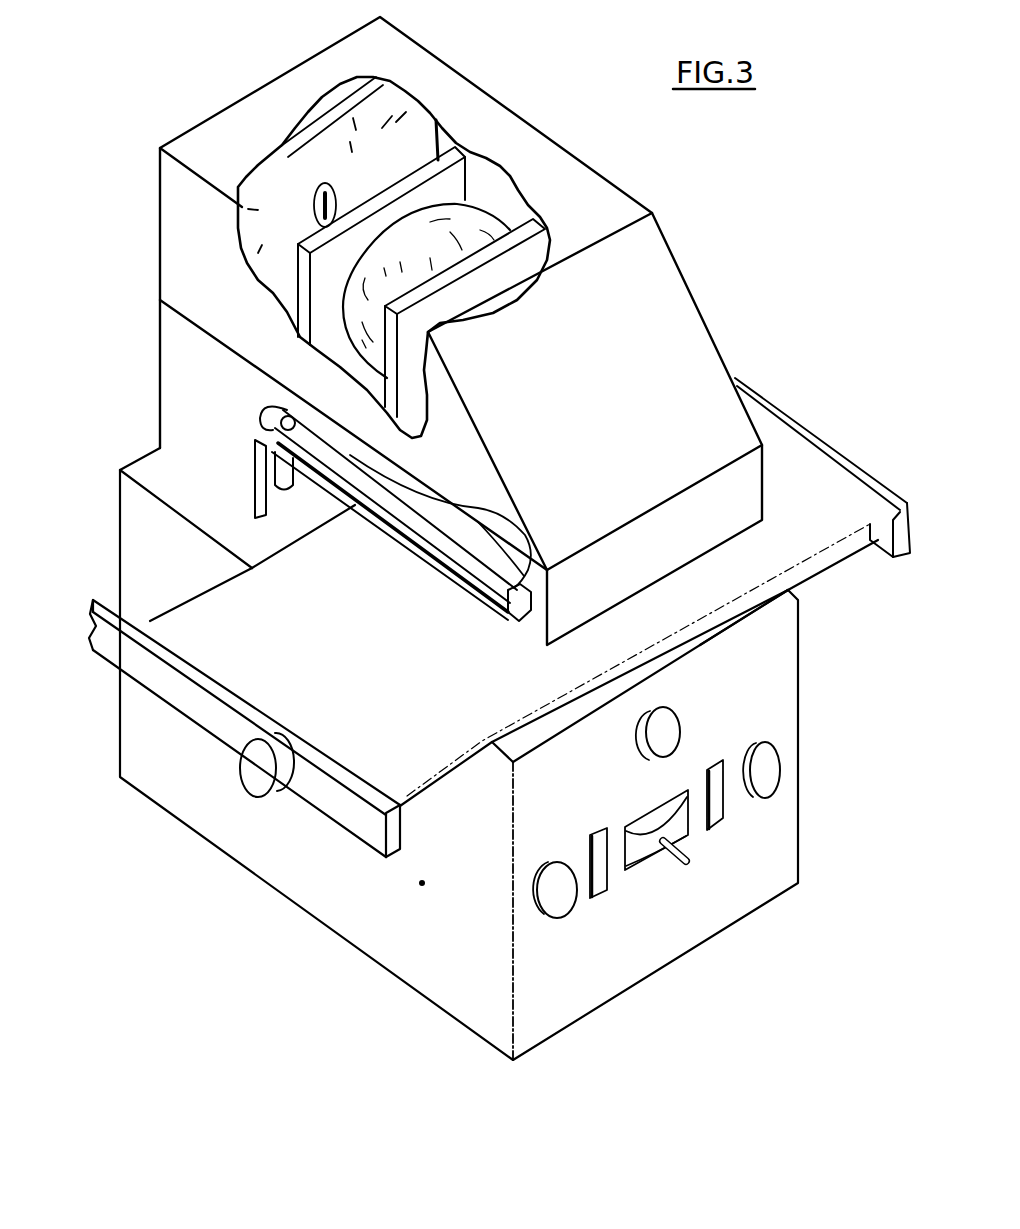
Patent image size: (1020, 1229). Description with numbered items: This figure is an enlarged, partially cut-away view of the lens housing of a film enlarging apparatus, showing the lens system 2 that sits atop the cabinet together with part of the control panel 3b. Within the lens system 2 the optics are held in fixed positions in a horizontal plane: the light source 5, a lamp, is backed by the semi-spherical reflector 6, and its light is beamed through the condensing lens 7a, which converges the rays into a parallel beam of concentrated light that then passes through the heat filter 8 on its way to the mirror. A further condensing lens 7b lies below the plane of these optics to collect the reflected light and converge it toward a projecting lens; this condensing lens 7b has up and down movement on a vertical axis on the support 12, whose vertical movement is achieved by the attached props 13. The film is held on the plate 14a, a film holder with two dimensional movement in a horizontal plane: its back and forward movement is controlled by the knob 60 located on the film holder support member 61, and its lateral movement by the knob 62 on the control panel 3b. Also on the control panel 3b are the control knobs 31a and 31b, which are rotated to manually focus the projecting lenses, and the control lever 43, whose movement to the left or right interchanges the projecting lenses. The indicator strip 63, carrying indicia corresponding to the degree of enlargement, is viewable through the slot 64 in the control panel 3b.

The lens system 2 is at (150, 212).
The light source 5 is at (325, 190).
The semi-spherical reflector 6 is at (404, 126).
The condensing lens 7a is at (498, 225).
The heat filter 8 is at (549, 228).
The props 13 is at (284, 473).
The plate 14a is at (783, 453).
The support 12 is at (455, 536).
The condensing lens 7b is at (505, 545).
The knob 62 is at (748, 672).
The control knob 31b is at (812, 747).
The indicator strip 63 is at (724, 803).
The slot 64 is at (727, 821).
The control lever 43 is at (690, 865).
The control knob 31a is at (552, 880).
The control panel 3b is at (646, 962).
The film holder support member 61 is at (177, 683).
The knob 60 is at (262, 788).